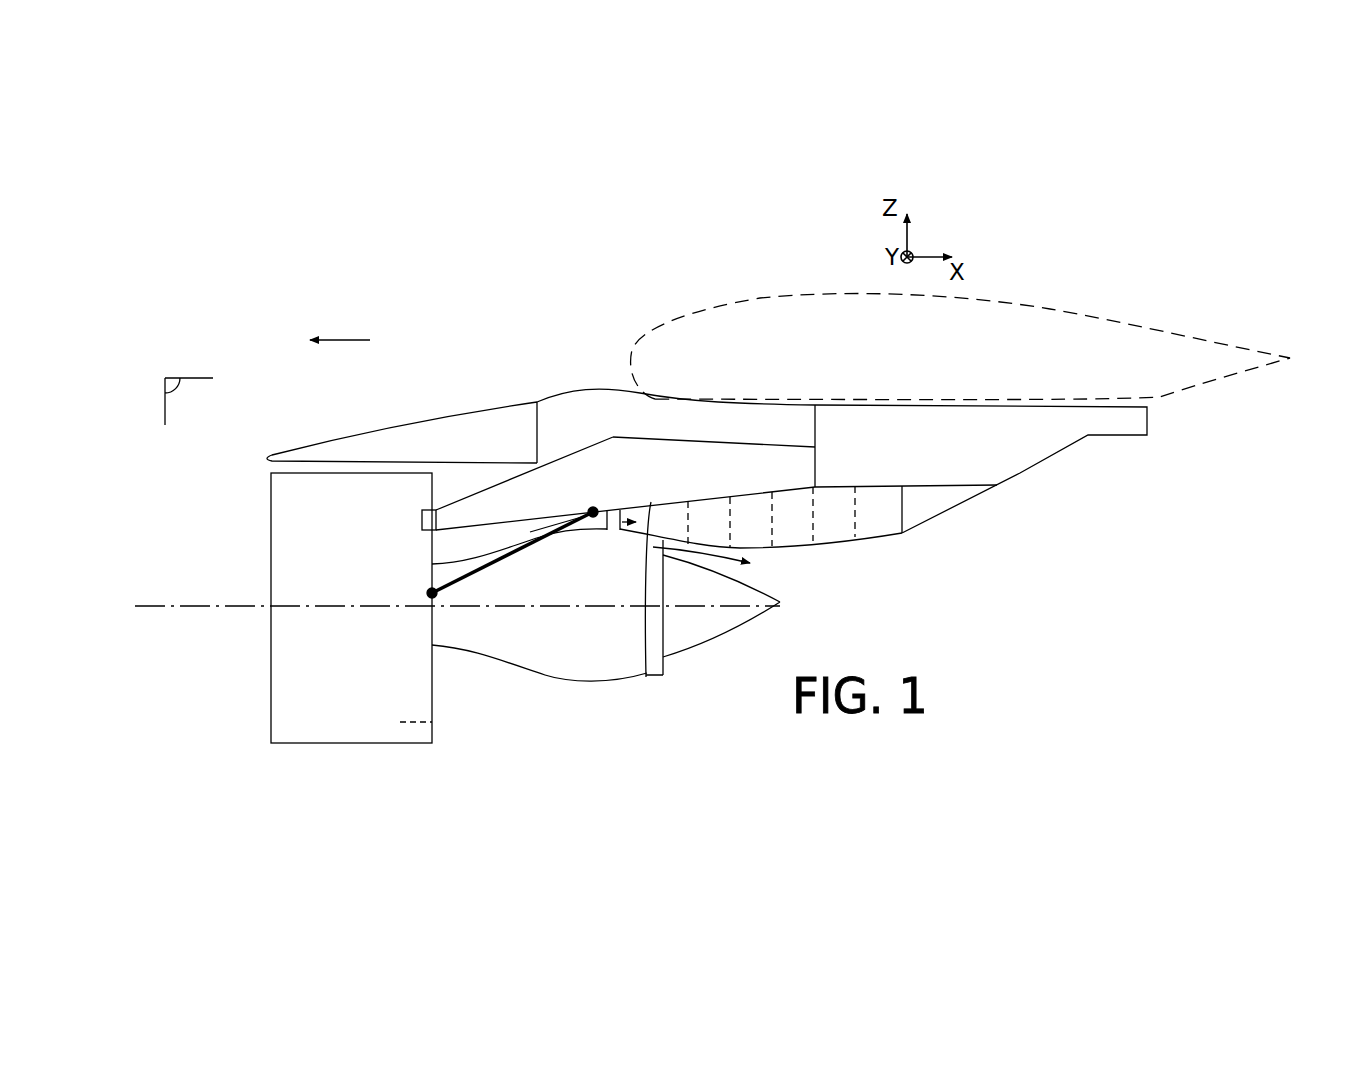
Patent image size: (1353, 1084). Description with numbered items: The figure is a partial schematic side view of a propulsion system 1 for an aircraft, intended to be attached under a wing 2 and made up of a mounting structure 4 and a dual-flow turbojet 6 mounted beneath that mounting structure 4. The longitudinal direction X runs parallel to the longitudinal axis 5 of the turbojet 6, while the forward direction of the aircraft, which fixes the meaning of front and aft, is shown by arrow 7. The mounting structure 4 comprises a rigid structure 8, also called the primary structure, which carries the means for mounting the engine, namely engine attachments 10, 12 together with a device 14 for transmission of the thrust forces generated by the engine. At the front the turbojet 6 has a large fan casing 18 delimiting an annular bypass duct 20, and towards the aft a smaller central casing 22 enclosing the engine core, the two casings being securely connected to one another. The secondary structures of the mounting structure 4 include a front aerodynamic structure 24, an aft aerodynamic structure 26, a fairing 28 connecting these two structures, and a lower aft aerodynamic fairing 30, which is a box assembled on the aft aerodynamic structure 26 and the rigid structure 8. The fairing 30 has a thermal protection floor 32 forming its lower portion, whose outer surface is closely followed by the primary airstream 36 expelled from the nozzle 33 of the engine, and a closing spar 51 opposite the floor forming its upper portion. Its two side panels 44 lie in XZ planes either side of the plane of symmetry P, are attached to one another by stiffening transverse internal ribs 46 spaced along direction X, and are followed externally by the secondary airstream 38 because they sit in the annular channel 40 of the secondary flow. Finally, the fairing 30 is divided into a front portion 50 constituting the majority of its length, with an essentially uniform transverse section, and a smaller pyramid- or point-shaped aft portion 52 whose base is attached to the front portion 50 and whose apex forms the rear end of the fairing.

The propulsion system 1 is at (211, 538).
The wing 2 is at (1082, 330).
The mounting structure 4 is at (627, 346).
The longitudinal axis 5 is at (145, 607).
The dual-flow turbojet 6 is at (342, 758).
The arrow 7 is at (337, 340).
The rigid structure 8 is at (695, 450).
The engine attachment 10 is at (418, 521).
The engine attachment 12 is at (632, 503).
The device for transmission of the thrust forces 14 is at (486, 573).
The fan casing 18 is at (284, 508).
The annular bypass duct 20 is at (433, 722).
The central casing 22 is at (468, 650).
The front aerodynamic structure 24 is at (448, 418).
The aft aerodynamic structure 26 is at (897, 423).
The fairing 28 is at (670, 402).
The lower aft aerodynamic fairing 30 is at (887, 528).
The thermal protection floor 32 is at (790, 548).
The nozzle 33 is at (664, 634).
The primary airstream 36 is at (733, 577).
The secondary airstream 38 is at (548, 527).
The annular channel 40 is at (458, 553).
The side panels 44 is at (893, 492).
The stiffening transverse internal ribs 46 is at (773, 520).
The front portion 50 is at (848, 533).
The closing spar 51 is at (720, 493).
The aft portion 52 is at (938, 508).
The plane of symmetry P is at (172, 378).